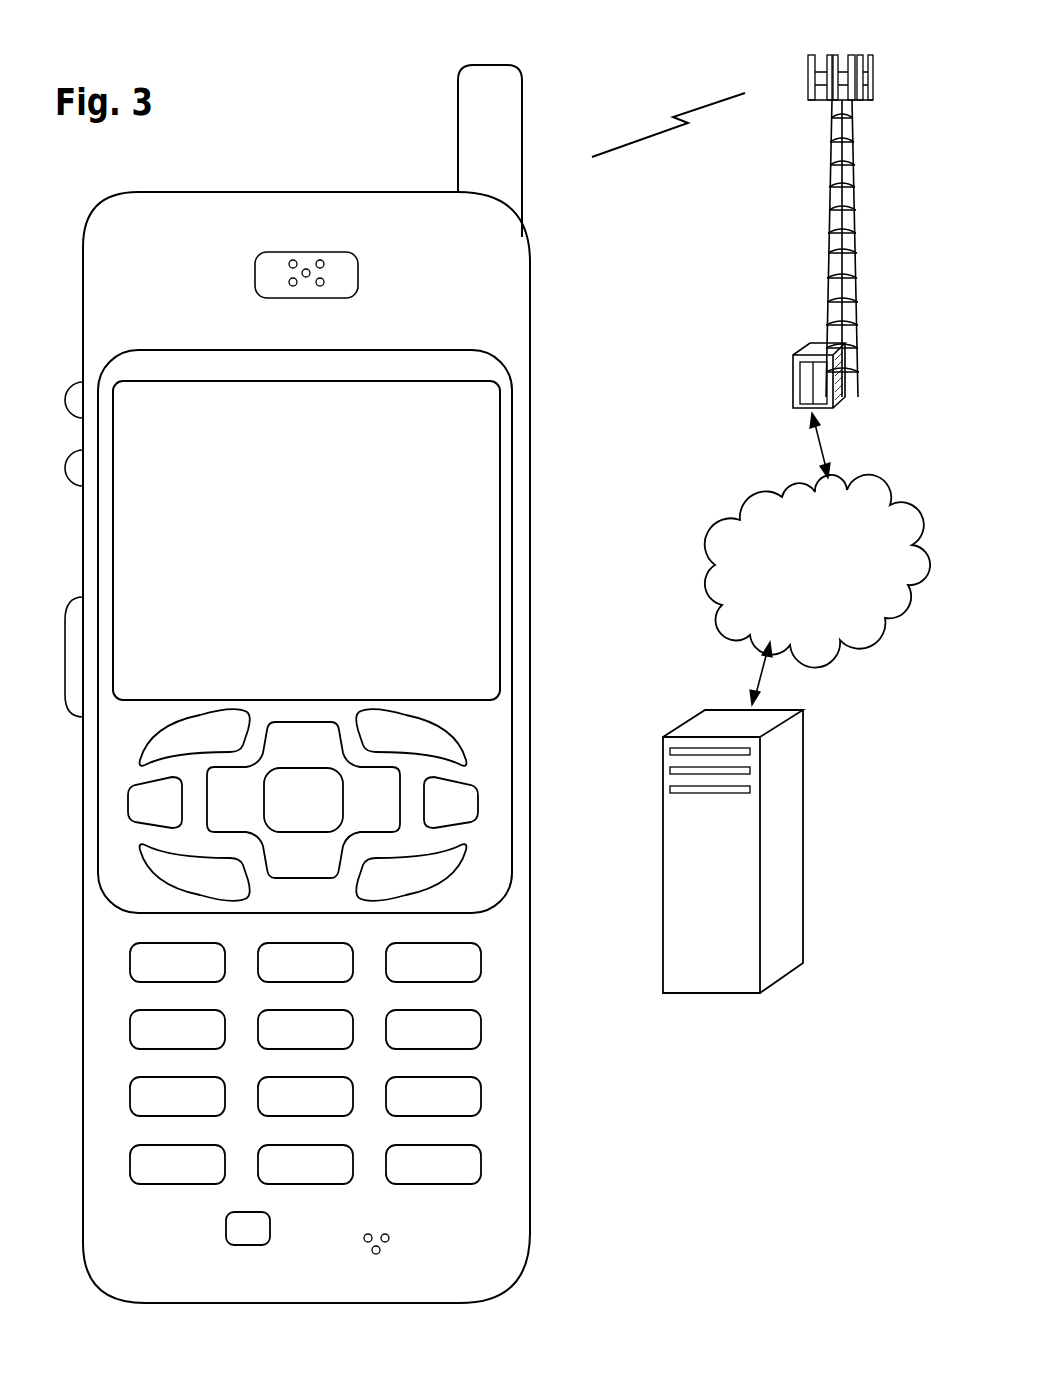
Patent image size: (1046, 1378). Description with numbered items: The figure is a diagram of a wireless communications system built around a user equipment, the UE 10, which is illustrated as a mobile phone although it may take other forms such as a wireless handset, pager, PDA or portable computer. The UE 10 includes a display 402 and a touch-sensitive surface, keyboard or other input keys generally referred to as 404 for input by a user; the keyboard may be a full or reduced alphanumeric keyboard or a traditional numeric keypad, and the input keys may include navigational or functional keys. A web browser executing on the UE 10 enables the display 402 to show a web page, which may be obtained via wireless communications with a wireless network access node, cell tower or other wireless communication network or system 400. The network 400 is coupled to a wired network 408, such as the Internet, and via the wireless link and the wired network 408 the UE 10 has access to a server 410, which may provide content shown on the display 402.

The UE 10 is at (140, 1302).
The display 402 is at (498, 397).
The input keys 404 is at (542, 710).
The wireless communication network or system 400 is at (828, 245).
The wired network 408 is at (727, 618).
The server 410 is at (710, 995).